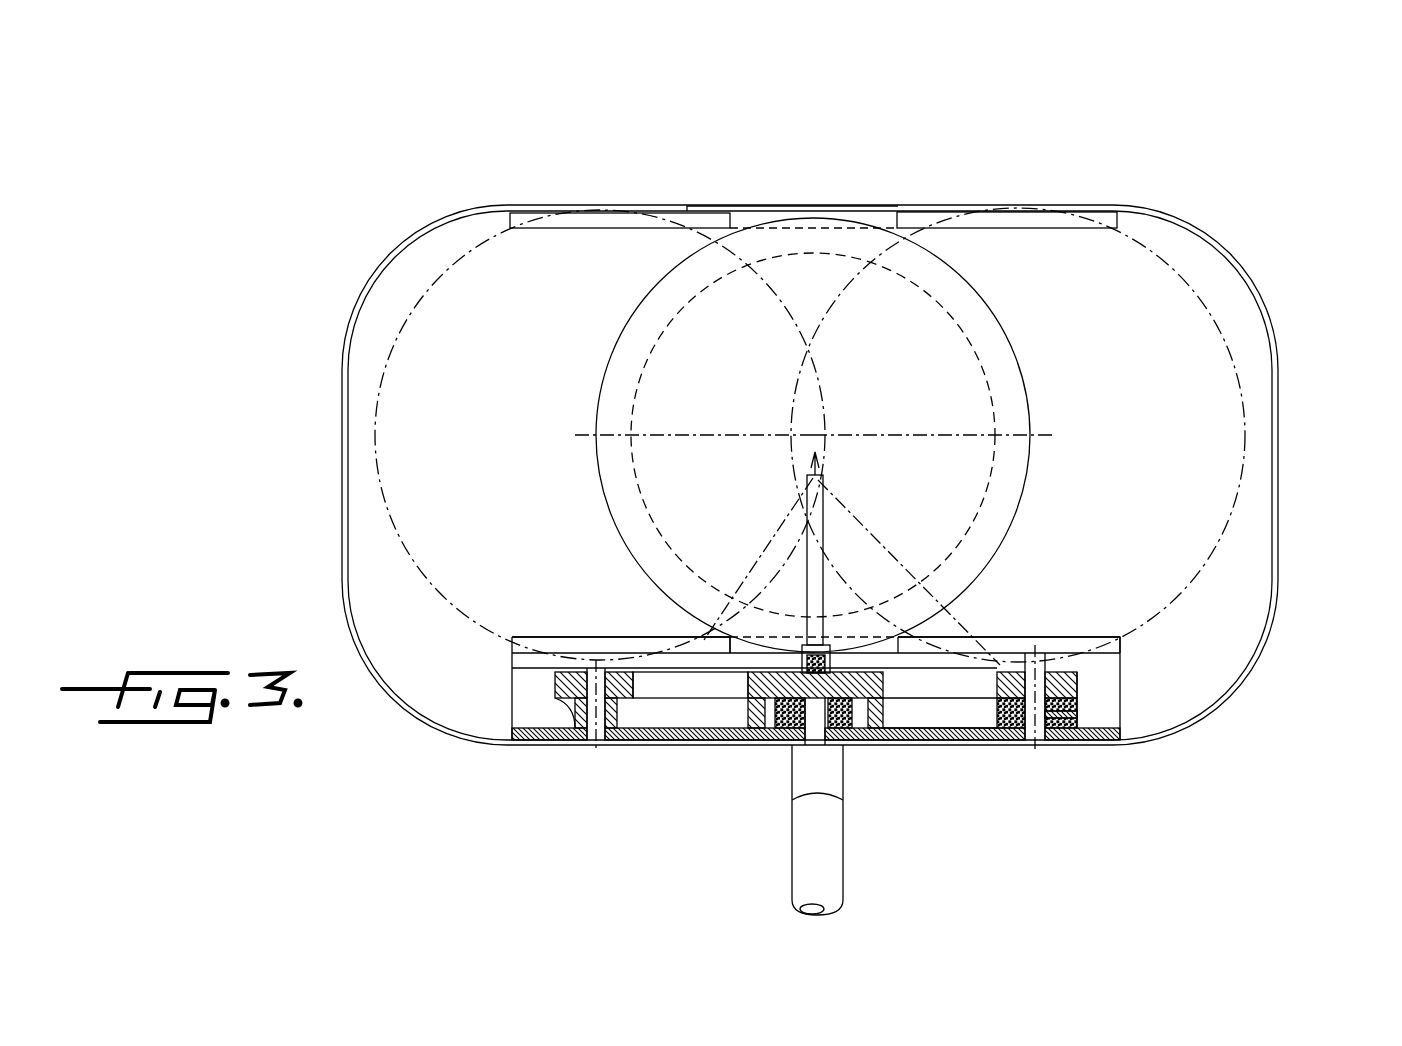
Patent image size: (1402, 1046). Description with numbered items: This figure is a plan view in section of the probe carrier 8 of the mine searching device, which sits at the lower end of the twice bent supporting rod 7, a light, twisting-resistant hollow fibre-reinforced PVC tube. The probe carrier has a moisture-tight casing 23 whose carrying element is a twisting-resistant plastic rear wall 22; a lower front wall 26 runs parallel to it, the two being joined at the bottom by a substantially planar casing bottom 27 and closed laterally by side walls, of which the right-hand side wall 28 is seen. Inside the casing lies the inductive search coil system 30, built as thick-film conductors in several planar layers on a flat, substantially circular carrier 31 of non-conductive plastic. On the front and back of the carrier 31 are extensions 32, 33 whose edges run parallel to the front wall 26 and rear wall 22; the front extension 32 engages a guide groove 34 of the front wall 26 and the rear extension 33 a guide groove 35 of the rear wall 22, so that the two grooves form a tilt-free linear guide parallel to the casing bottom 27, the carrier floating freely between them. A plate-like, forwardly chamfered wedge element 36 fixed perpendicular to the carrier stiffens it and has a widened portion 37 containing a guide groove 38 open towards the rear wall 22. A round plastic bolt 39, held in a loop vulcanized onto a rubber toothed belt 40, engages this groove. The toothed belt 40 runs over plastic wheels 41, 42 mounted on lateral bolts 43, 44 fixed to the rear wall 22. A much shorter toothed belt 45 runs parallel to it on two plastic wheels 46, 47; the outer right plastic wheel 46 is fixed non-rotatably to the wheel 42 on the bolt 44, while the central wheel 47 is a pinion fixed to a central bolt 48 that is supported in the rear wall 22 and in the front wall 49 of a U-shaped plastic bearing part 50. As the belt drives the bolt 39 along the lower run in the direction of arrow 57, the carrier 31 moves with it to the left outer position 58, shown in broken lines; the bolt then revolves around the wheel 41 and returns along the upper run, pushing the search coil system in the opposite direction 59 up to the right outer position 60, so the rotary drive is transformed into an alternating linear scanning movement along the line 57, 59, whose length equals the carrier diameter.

The supporting rod 7 is at (840, 893).
The probe carrier 8 is at (416, 114).
The rear wall 22 is at (1150, 742).
The casing 23 is at (1212, 236).
The front wall 26 is at (1047, 221).
The casing bottom 27 is at (1170, 652).
The side wall 28 is at (1280, 450).
The search coil system 30 is at (947, 302).
The carrier 31 is at (935, 262).
The front extension 32 is at (748, 218).
The rear extension 33 is at (735, 650).
The guide groove 34 is at (503, 221).
The guide groove 35 is at (507, 648).
The wedge element 36 is at (823, 528).
The widened portion 37 is at (805, 663).
The guide groove 38 is at (815, 655).
The bolt 39 is at (830, 668).
The toothed belt 40 is at (560, 700).
The plastic wheel 41 is at (620, 703).
The plastic wheel 42 is at (1060, 680).
The bolt 43 is at (600, 745).
The bolt 44 is at (1040, 745).
The toothed belt 45 is at (768, 700).
The plastic wheel 46 is at (1065, 720).
The central wheel 47 is at (858, 700).
The central bolt 48 is at (857, 668).
The front wall 49 is at (895, 690).
The bearing part 50 is at (738, 689).
The arrow 57 is at (573, 435).
The left outer position 58 is at (381, 383).
The direction 59 is at (1052, 435).
The right outer position 60 is at (1240, 368).